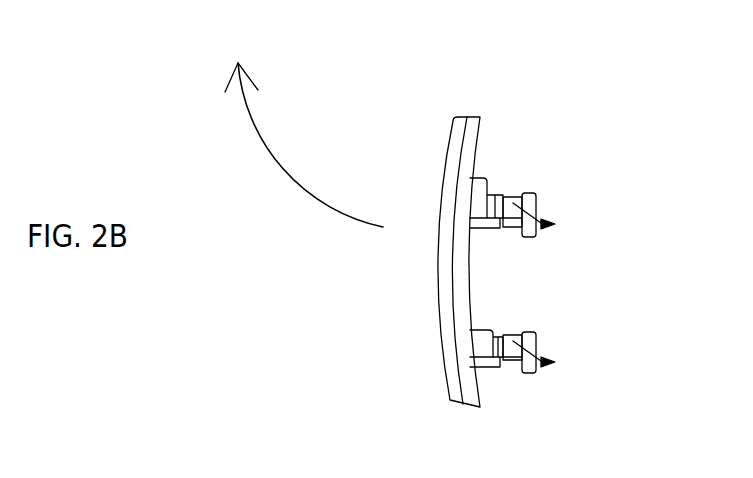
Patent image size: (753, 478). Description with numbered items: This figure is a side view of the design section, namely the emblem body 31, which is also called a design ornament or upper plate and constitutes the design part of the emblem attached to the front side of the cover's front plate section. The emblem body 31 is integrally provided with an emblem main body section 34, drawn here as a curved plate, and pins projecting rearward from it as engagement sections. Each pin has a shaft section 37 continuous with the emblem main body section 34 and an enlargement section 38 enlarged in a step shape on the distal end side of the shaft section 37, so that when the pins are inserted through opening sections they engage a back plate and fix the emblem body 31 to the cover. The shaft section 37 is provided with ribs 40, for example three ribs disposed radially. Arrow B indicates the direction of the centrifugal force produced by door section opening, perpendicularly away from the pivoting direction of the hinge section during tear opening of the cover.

The emblem body 31 is at (427, 88).
The emblem main body section 34 is at (449, 141).
The shaft section 37 is at (507, 196).
The enlargement section 38 is at (537, 203).
The rib 40 is at (545, 224).
The arrow B is at (278, 148).